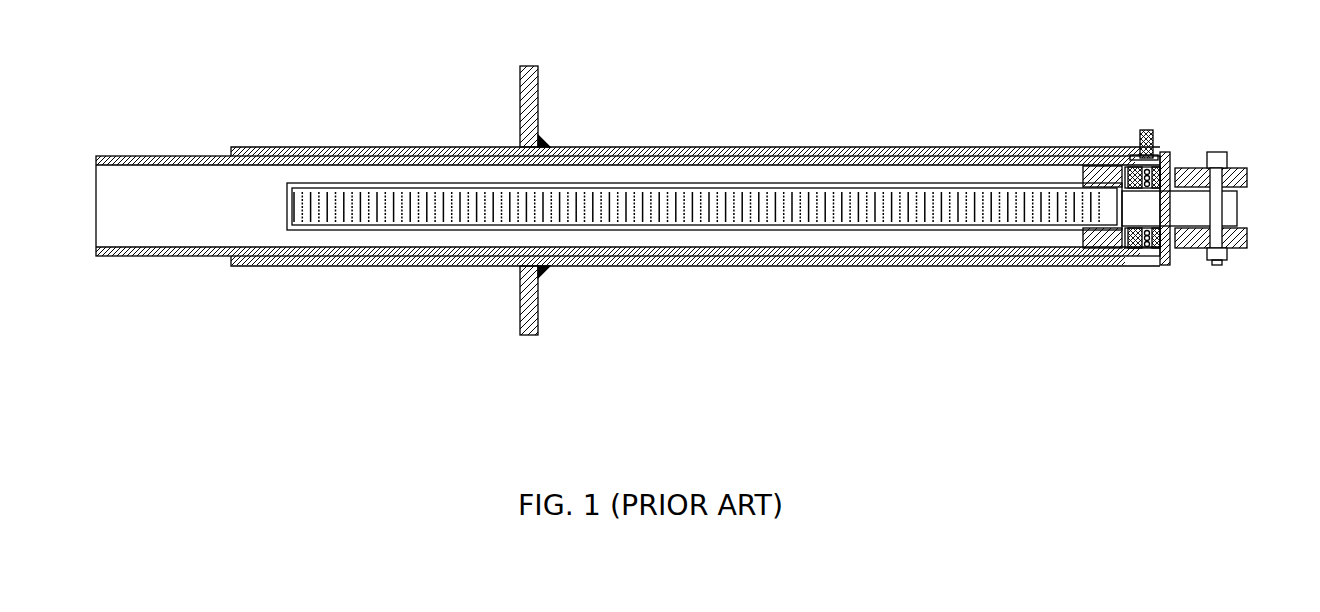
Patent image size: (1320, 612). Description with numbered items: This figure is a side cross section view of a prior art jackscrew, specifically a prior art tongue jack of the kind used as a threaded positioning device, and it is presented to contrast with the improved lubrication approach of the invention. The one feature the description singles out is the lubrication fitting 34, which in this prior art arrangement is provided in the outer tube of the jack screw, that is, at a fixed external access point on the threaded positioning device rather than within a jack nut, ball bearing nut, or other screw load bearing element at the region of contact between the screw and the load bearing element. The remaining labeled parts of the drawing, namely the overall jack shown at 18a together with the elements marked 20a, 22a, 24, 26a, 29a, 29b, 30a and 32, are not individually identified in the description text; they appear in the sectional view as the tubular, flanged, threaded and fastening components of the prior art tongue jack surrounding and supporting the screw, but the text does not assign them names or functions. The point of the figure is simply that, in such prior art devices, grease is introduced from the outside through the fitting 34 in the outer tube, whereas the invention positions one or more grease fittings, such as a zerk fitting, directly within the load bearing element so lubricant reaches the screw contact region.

The telescoping tube assembly 18a is at (816, 97).
The outer tube 20a is at (918, 263).
The inner tube 22a is at (148, 256).
The mounting flange 24 is at (538, 308).
The end flange 26a is at (1190, 248).
The bolt 29a is at (1216, 152).
The nut 29b is at (1228, 255).
The lead screw 30a is at (950, 205).
The bushing 32 is at (1093, 268).
The lubrication fitting 34 is at (1148, 130).